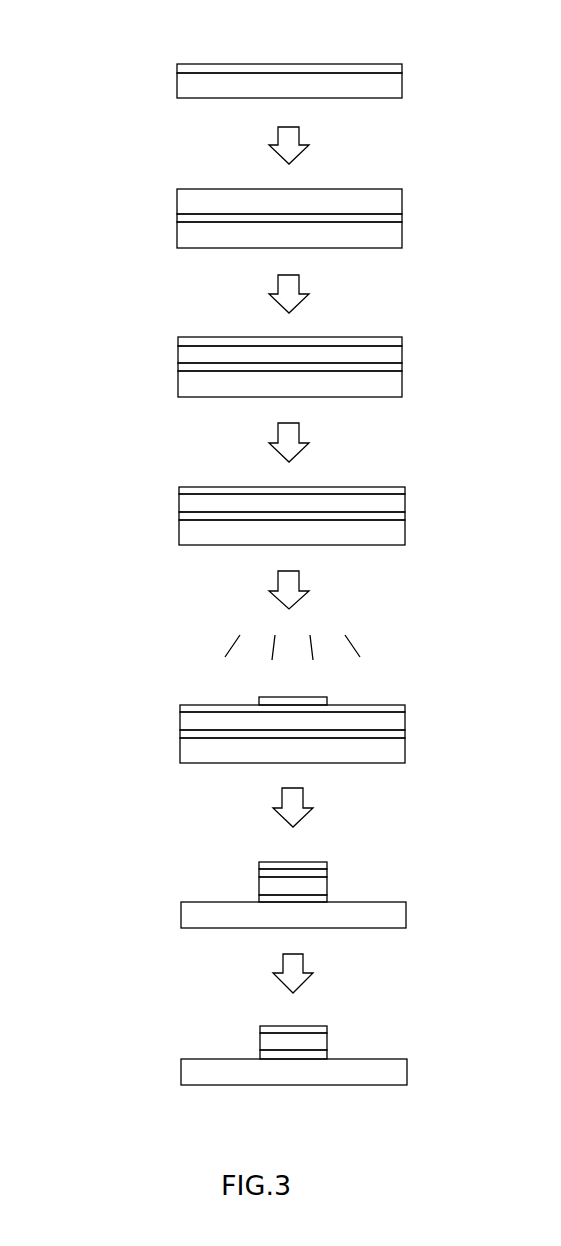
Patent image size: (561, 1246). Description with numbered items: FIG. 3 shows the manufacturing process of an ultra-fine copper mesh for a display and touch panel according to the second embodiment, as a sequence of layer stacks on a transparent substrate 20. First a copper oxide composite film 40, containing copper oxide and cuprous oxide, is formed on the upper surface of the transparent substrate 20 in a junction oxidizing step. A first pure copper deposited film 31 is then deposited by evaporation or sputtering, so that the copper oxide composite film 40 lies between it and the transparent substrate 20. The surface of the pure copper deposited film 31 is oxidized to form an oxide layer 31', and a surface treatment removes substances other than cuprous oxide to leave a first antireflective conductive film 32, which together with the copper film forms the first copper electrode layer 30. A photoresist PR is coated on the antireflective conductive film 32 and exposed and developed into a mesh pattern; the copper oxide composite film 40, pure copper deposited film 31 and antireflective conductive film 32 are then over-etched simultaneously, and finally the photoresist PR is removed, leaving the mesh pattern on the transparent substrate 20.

The first copper electrode layer 30 is at (258, 555).
The transparent substrate 20 is at (402, 85).
The copper oxide composite film 40 is at (402, 68).
The first pure copper deposited film 31 is at (320, 613).
The oxide layer 31' is at (323, 325).
The first antireflective conductive film 32 is at (405, 490).
The photoresist PR is at (317, 698).